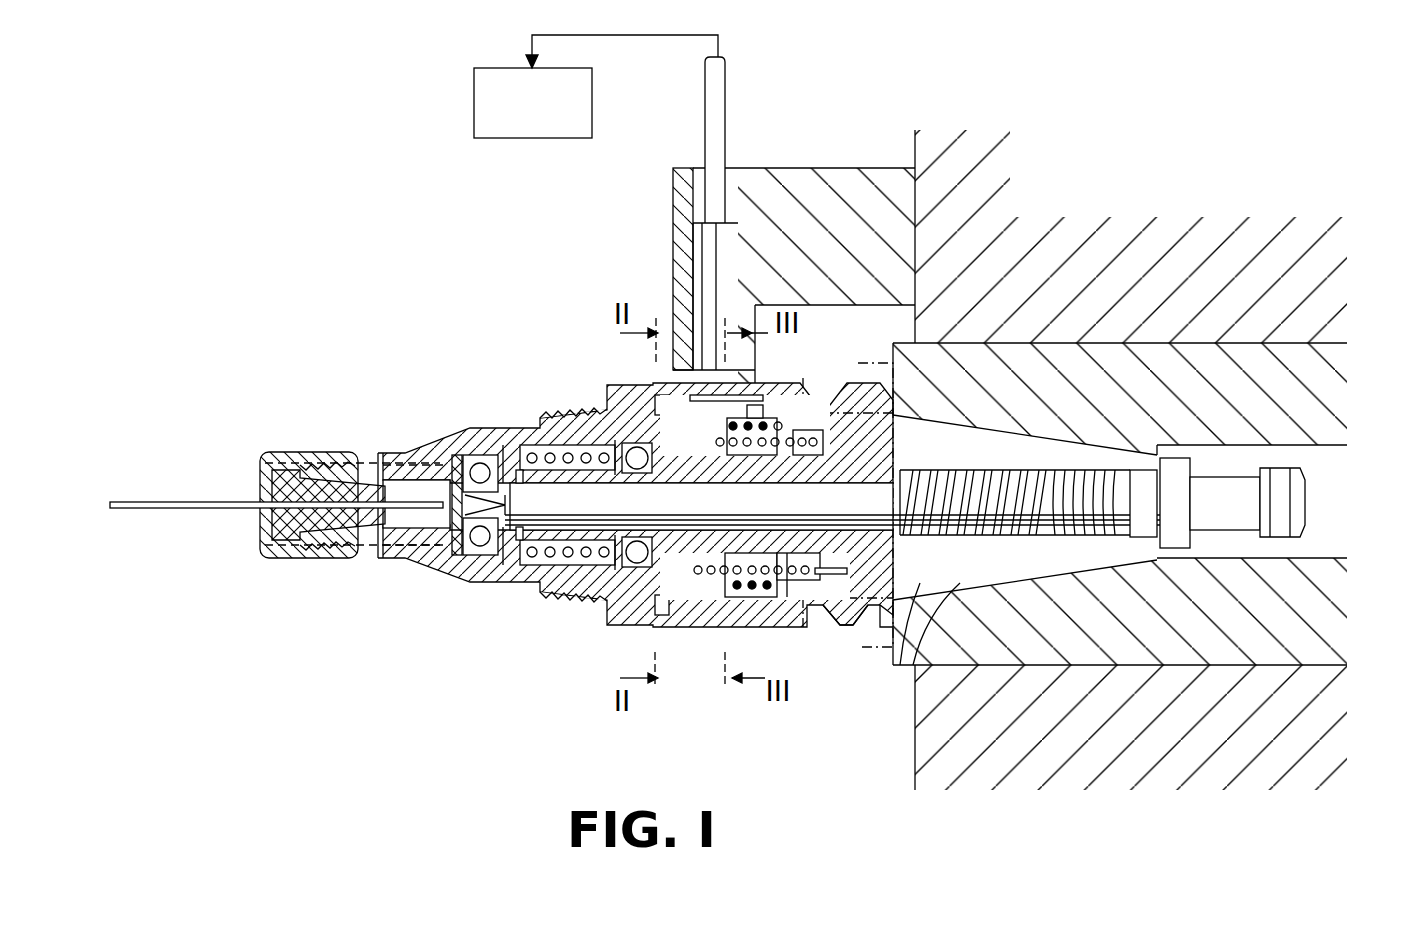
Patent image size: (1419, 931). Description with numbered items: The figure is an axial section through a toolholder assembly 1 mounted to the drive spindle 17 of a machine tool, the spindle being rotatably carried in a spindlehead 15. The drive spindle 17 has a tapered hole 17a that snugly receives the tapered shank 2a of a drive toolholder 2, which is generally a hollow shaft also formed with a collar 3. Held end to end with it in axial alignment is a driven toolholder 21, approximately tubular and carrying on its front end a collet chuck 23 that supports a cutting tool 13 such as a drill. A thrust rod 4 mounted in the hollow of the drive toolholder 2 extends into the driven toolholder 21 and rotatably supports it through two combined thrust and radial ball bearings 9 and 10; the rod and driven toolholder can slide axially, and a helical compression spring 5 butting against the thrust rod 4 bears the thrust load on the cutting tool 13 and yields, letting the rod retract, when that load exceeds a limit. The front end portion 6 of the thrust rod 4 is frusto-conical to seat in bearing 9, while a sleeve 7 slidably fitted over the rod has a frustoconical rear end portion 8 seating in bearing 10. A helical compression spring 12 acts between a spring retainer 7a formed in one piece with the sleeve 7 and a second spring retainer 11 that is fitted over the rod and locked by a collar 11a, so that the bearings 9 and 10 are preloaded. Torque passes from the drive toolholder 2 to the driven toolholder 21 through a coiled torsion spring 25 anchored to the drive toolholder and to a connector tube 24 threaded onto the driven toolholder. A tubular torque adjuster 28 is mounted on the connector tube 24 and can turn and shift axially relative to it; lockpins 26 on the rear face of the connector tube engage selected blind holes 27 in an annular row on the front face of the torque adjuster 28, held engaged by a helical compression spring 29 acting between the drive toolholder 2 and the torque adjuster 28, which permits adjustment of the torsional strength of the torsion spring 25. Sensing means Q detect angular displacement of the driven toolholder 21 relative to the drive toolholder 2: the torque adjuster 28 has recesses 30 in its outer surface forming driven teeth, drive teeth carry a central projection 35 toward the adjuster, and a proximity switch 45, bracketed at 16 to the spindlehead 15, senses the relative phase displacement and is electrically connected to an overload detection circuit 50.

The toolholder assembly 1 is at (822, 377).
The drive toolholder 2 is at (900, 640).
The tapered shank 2a is at (920, 662).
The collar 3 is at (850, 633).
The thrust rod 4 is at (845, 495).
The helical compression spring 5 is at (940, 490).
The front end portion 6 is at (462, 470).
The sleeve 7 is at (515, 565).
The spring retainer 7a is at (525, 440).
The rear end portion 8 is at (643, 525).
The ball bearing 9 is at (475, 460).
The ball bearing 10 is at (615, 430).
The spring retainer 11 is at (490, 562).
The collar 11a is at (470, 563).
The helical compression spring 12 is at (540, 583).
The cutting tool 13 is at (157, 500).
The spindlehead 15 is at (915, 152).
The bracket 16 is at (780, 168).
The drive spindle 17 is at (1347, 402).
The tapered hole 17a is at (1020, 445).
The driven toolholder 21 is at (492, 425).
The collet chuck 23 is at (304, 572).
The connector tube 24 is at (590, 608).
The coiled torsion spring 25 is at (750, 592).
The lockpin 26 is at (655, 383).
The blind holes 27 is at (662, 618).
The torque adjuster 28 is at (680, 380).
The helical compression spring 29 is at (787, 600).
The recesses 30 is at (700, 384).
The central projection 35 is at (733, 382).
The proximity switch 45 is at (695, 232).
The overload detection circuit 50 is at (474, 105).
The sensing means Q is at (645, 283).